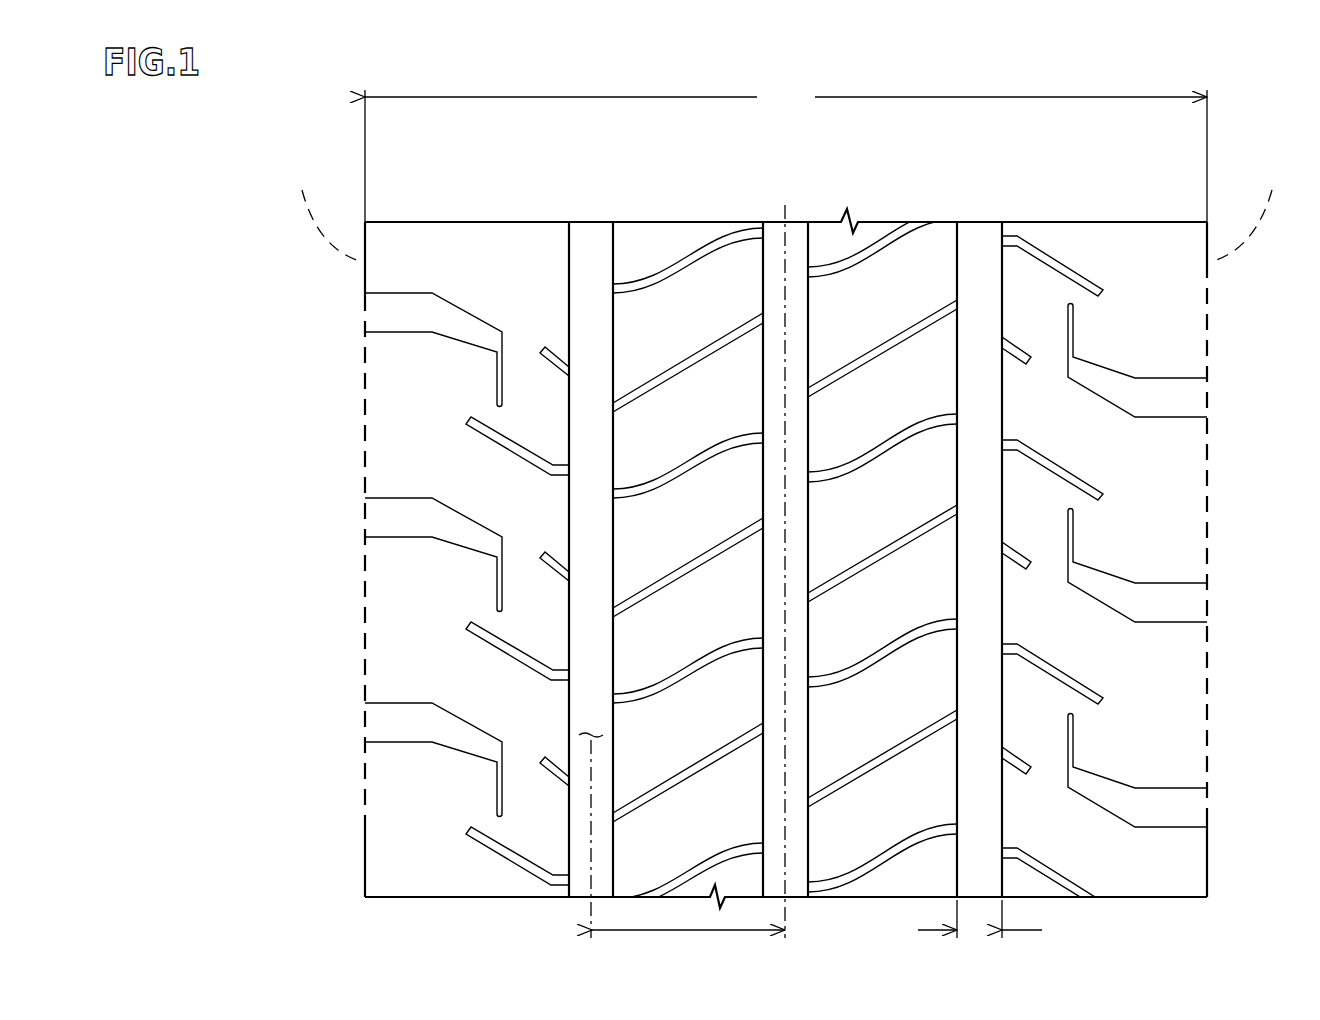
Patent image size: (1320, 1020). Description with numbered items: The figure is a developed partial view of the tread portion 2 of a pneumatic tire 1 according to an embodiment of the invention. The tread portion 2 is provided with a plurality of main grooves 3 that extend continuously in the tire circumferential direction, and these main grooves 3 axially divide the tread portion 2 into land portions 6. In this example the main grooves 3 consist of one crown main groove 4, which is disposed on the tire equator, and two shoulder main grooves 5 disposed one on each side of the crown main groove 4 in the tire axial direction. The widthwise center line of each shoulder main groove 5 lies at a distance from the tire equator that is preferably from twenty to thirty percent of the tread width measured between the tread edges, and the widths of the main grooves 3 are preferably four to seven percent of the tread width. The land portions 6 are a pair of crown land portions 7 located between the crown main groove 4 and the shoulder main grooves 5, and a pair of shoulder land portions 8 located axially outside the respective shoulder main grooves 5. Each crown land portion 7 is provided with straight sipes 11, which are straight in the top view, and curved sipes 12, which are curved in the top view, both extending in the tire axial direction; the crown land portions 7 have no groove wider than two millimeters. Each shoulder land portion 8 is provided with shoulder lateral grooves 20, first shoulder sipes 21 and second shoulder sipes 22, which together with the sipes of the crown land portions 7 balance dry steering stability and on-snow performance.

The pneumatic tire 1 is at (937, 212).
The tread portion 2 is at (720, 215).
The main grooves 3 is at (802, 514).
The crown main groove 4 is at (792, 265).
The shoulder main grooves 5 is at (596, 290).
The land portions 6 is at (660, 152).
The crown land portions 7 is at (690, 305).
The shoulder land portions 8 is at (468, 270).
The straight sipes 11 is at (670, 372).
The curved sipes 12 is at (668, 478).
The shoulder lateral grooves 20 is at (408, 722).
The first shoulder sipes 21 is at (508, 648).
The second shoulder sipes 22 is at (553, 768).